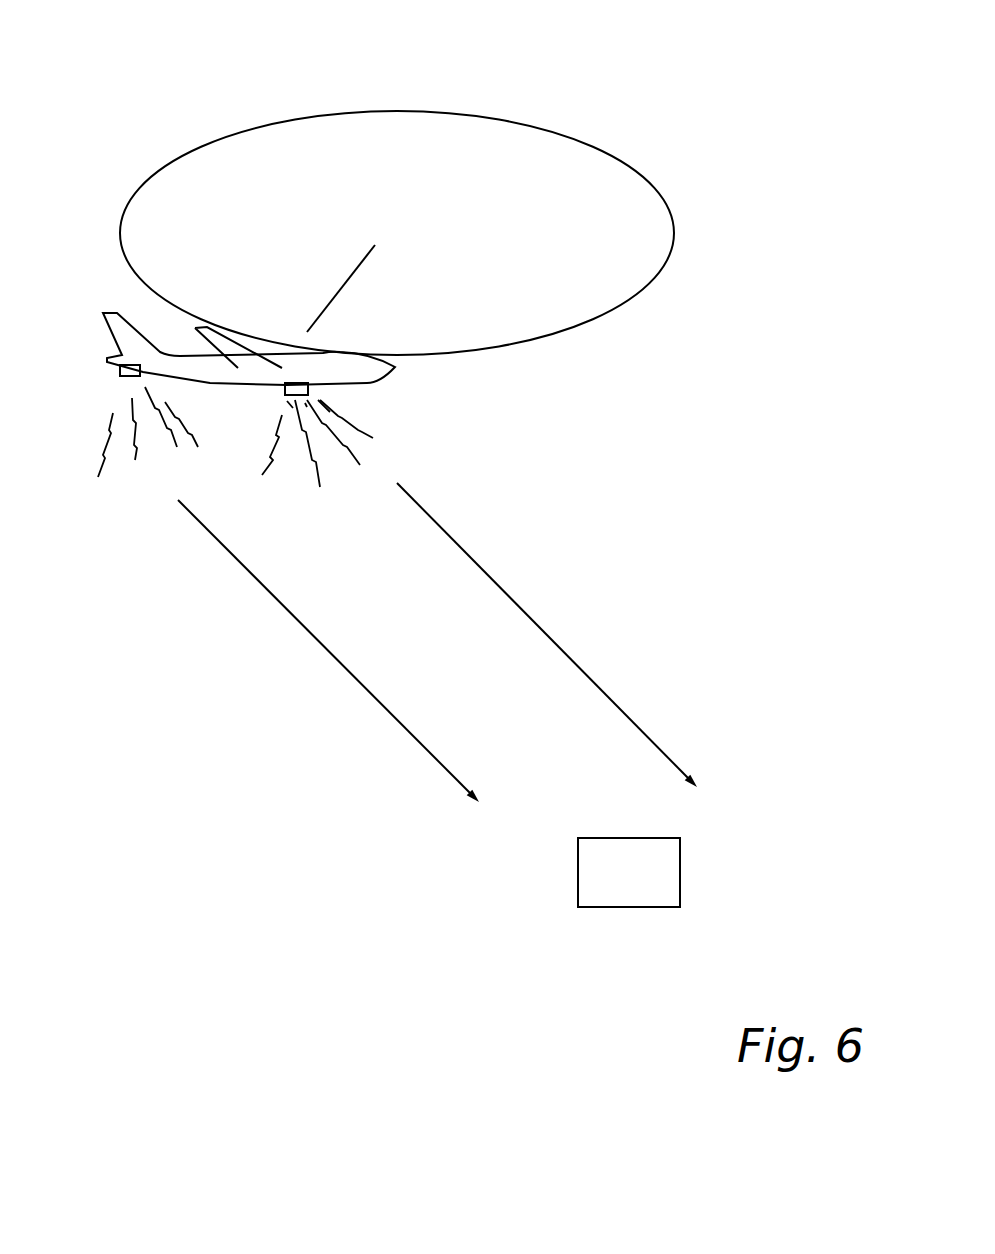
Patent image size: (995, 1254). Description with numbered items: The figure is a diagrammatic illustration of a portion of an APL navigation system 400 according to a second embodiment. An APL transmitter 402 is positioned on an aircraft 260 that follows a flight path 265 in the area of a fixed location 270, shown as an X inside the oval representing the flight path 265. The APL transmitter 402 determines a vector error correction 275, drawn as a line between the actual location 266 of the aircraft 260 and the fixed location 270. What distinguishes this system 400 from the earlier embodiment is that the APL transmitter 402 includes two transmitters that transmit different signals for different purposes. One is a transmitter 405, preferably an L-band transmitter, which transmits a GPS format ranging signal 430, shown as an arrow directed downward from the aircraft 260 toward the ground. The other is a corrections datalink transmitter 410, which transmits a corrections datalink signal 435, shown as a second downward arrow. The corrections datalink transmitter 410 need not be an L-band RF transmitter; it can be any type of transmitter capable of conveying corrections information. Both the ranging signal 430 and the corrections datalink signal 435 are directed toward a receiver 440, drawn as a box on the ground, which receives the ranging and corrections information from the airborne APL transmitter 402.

The APL navigation system 400 is at (749, 63).
The flight path 265 is at (675, 237).
The fixed location 270 is at (417, 237).
The vector error correction 275 is at (363, 263).
The actual location 266 is at (360, 353).
The aircraft 260 is at (393, 370).
The transmitter 405 is at (307, 388).
The corrections datalink transmitter 410 is at (130, 378).
The APL transmitter 402 is at (84, 509).
The GPS format ranging signal 430 is at (577, 668).
The corrections datalink signal 435 is at (342, 667).
The receiver 440 is at (680, 872).